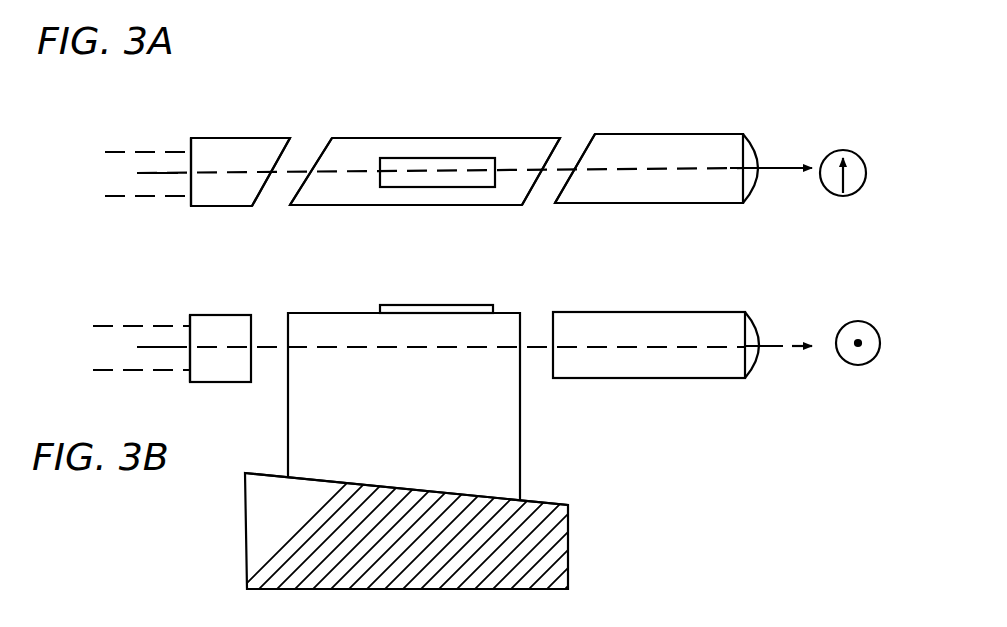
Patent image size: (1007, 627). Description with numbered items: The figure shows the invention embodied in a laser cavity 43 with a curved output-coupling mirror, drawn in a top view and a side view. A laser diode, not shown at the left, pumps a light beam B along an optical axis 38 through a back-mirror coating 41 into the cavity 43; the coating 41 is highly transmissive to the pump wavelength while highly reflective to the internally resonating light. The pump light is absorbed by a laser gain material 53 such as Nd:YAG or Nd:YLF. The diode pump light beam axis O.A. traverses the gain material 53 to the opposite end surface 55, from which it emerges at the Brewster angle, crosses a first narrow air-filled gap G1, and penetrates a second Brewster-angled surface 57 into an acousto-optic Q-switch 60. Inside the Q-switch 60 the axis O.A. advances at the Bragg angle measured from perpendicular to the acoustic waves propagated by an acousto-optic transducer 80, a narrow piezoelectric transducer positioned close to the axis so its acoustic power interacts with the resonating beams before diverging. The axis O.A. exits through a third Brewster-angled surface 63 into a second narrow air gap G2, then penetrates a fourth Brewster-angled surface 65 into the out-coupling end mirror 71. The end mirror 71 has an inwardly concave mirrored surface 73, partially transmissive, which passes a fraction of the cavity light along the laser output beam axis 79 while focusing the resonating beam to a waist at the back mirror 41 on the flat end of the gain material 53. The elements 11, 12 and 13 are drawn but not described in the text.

In FIG. 3A, the polarization direction indicator 11 is at (833, 152).
In FIG. 3B, the polarization direction indicator 11 is at (845, 321).
In FIG. 3B, the substrate 12 is at (568, 543).
In FIG. 3B, the mounting surface of substrate 13 is at (522, 501).
In FIG. 3A, the optical axis 38 is at (150, 173).
In FIG. 3B, the optical axis 38 is at (150, 348).
In FIG. 3A, the back-mirror coating 41 is at (191, 140).
In FIG. 3B, the back-mirror coating 41 is at (190, 376).
In FIG. 3B, the cavity 43 is at (176, 527).
In FIG. 3A, the laser gain material 53 is at (230, 140).
In FIG. 3B, the laser gain material 53 is at (231, 381).
In FIG. 3A, the opposite end surface 55 is at (292, 140).
In FIG. 3A, the second Brewster-angled surface 57 is at (333, 140).
In FIG. 3A, the acousto-optic Q-switch 60 is at (414, 134).
In FIG. 3B, the acousto-optic Q-switch 60 is at (421, 411).
In FIG. 3A, the third Brewster-angled surface 63 is at (562, 140).
In FIG. 3A, the fourth Brewster-angled surface 65 is at (598, 137).
In FIG. 3A, the out-coupling end mirror 71 is at (676, 201).
In FIG. 3B, the out-coupling end mirror 71 is at (647, 373).
In FIG. 3A, the concave mirrored surface 73 is at (757, 143).
In FIG. 3B, the concave mirrored surface 73 is at (748, 378).
In FIG. 3B, the laser output beam axis 79 is at (768, 348).
In FIG. 3A, the acousto-optic transducer 80 is at (418, 176).
In FIG. 3B, the acousto-optic transducer 80 is at (425, 305).
In FIG. 3A, the pump light beam B is at (145, 138).
In FIG. 3B, the pump light beam B is at (110, 314).
In FIG. 3A, the first narrow gap G1 is at (276, 207).
In FIG. 3B, the first narrow gap G1 is at (270, 316).
In FIG. 3A, the second narrow gap G2 is at (545, 197).
In FIG. 3B, the second narrow gap G2 is at (540, 321).
In FIG. 3A, the diode pump light beam axis O.A. is at (782, 168).
In FIG. 3B, the diode pump light beam axis O.A. is at (785, 340).